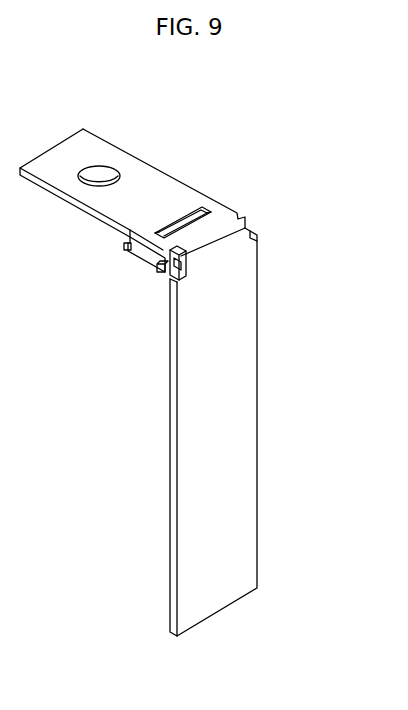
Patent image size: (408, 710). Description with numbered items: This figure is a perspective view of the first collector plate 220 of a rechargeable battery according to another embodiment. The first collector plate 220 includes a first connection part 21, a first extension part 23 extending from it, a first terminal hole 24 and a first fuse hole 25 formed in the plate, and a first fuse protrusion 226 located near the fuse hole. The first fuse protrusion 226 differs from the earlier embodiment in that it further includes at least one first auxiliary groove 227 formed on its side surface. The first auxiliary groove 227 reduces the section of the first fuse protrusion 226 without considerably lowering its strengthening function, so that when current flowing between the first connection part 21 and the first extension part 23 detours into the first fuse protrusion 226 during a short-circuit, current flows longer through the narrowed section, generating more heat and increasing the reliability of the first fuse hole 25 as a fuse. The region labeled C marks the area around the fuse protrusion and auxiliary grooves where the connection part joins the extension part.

The first connection part 21 is at (141, 177).
The first extension part 23 is at (243, 360).
The first terminal hole 24 is at (99, 167).
The first fuse hole 25 is at (190, 212).
The first collector plate 220 is at (278, 200).
The first fuse protrusion 226 is at (142, 262).
The first auxiliary groove 227 is at (125, 248).
The hook portion C is at (218, 240).